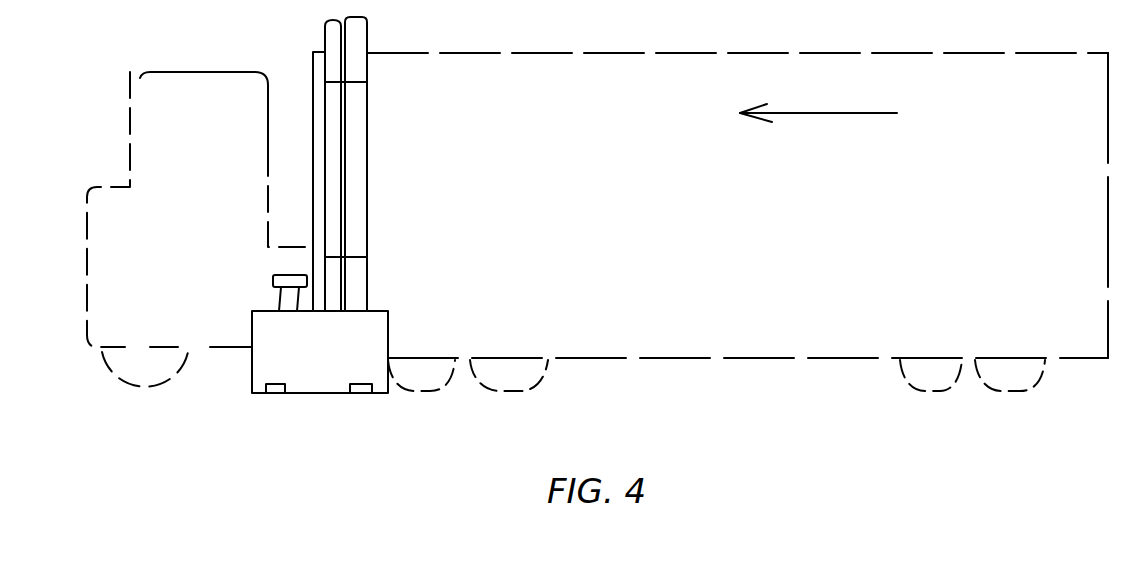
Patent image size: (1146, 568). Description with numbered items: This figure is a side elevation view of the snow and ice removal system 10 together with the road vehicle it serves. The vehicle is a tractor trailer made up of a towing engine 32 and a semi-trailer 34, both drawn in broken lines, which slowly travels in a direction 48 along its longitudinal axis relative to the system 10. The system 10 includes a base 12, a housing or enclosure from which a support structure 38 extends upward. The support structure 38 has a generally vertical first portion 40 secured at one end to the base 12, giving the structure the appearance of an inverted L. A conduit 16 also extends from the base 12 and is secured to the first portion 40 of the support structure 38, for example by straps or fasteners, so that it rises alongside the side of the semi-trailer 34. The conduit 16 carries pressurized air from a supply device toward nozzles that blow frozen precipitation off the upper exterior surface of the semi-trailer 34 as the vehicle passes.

The snow and ice removal system 10 is at (238, 418).
The base 12 is at (262, 3).
The conduit 16 is at (325, 36).
The towing engine or tractor 32 is at (127, 68).
The semi-trailer 34 is at (418, 53).
The support structure 38 is at (368, 145).
The first portion 40 is at (368, 205).
The direction of travel 48 is at (828, 112).